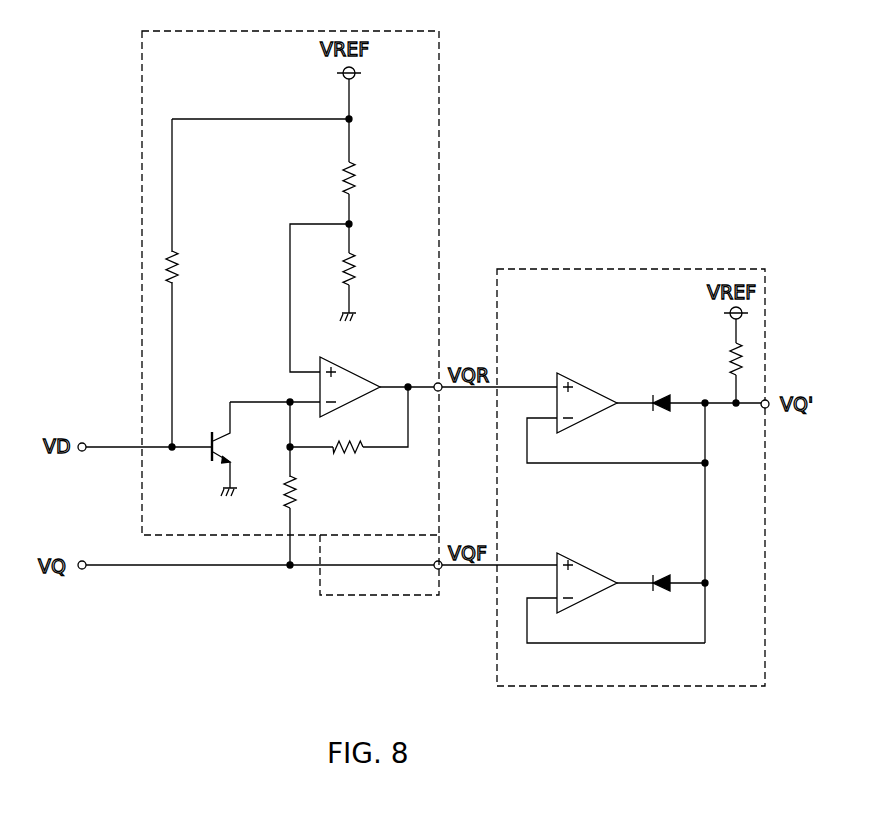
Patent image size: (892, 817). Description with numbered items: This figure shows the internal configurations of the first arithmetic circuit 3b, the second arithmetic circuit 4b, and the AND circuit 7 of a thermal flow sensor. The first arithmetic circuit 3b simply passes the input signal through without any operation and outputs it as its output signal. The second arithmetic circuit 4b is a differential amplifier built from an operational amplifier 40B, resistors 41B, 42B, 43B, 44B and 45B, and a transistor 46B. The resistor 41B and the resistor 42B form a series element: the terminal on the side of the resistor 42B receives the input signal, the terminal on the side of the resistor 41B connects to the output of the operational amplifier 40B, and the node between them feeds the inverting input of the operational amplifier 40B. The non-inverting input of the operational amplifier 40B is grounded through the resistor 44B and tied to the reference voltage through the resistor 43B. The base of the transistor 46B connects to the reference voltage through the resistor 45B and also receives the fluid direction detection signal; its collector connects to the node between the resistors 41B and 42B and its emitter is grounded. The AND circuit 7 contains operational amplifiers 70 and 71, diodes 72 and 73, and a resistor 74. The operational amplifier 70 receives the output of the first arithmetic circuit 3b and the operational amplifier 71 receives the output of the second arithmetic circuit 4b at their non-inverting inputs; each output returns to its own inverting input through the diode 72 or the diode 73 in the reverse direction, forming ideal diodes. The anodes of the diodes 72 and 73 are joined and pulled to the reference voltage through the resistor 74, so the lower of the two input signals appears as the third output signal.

The second arithmetic circuit 4b is at (438, 104).
The first arithmetic circuit 3b is at (360, 597).
The AND circuit 7 is at (545, 268).
The operational amplifier 40B is at (356, 366).
The resistor 41B is at (352, 455).
The resistor 42B is at (302, 488).
The resistor 43B is at (366, 172).
The resistor 44B is at (368, 267).
The resistor 45B is at (183, 258).
The transistor 46B is at (213, 467).
The operational amplifier 70 is at (583, 564).
The operational amplifier 71 is at (582, 383).
The diode 72 is at (668, 568).
The diode 73 is at (668, 388).
The resistor 74 is at (727, 349).